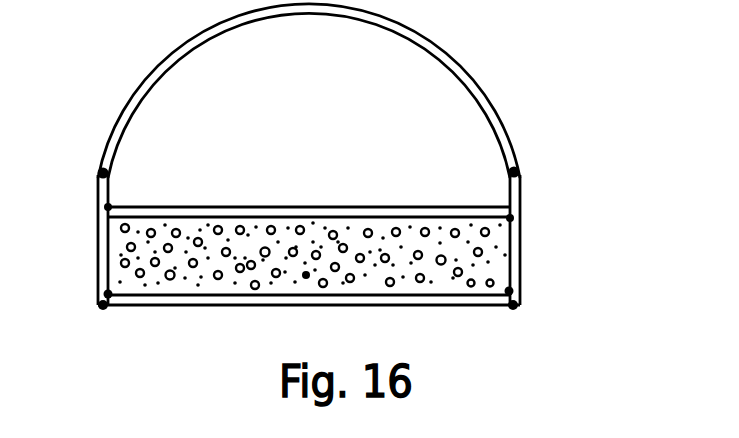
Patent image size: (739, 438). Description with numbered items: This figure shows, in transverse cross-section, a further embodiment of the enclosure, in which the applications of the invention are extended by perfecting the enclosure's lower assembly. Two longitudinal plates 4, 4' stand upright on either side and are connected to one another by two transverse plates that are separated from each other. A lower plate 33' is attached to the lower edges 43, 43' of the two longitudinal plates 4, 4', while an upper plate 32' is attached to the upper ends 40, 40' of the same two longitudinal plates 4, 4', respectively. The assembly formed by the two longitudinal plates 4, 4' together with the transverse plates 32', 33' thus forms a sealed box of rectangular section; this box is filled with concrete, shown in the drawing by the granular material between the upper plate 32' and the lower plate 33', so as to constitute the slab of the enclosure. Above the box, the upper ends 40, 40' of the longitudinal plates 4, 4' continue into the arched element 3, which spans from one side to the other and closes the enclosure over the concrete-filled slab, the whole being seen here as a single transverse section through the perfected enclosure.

The dome-shaped cover 3 is at (475, 82).
The longitudinal plate 4 is at (74, 240).
The longitudinal plate 4' is at (548, 240).
The upper plate 32' is at (370, 149).
The lower plate 33' is at (371, 261).
The upper end 40 is at (70, 180).
The upper end 40' is at (563, 186).
The lower edge 43 is at (75, 290).
The lower edge 43' is at (554, 291).